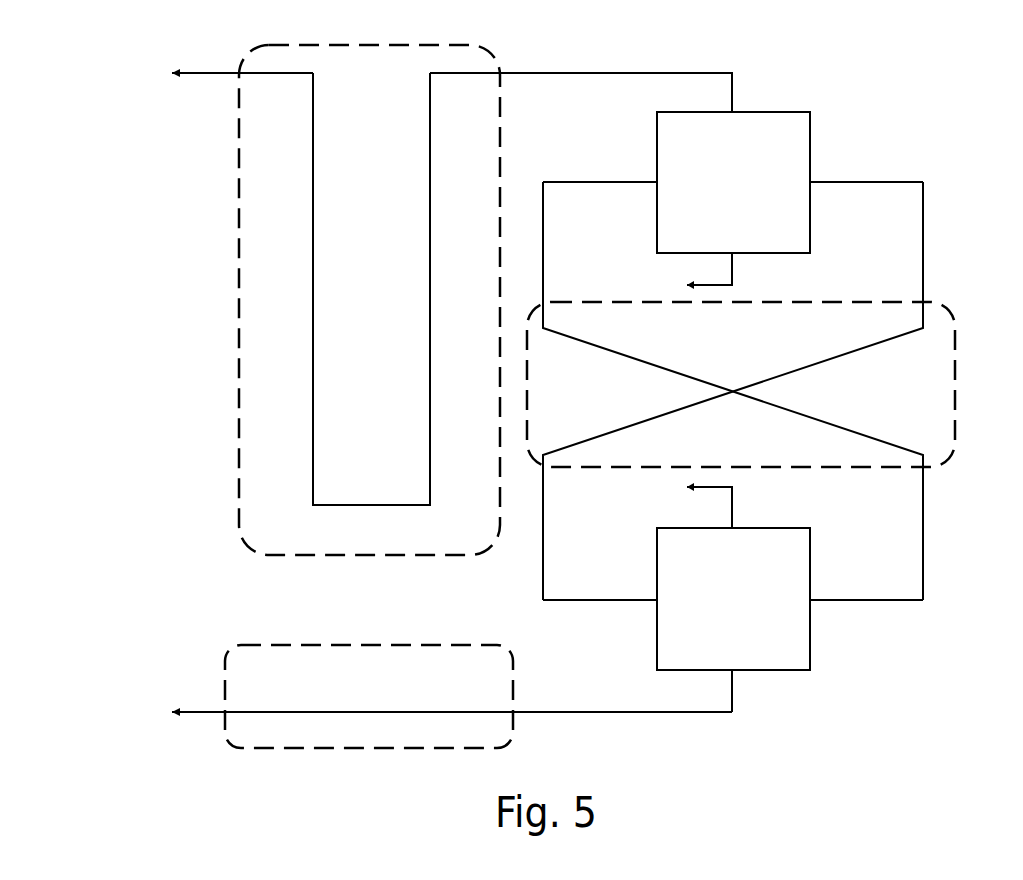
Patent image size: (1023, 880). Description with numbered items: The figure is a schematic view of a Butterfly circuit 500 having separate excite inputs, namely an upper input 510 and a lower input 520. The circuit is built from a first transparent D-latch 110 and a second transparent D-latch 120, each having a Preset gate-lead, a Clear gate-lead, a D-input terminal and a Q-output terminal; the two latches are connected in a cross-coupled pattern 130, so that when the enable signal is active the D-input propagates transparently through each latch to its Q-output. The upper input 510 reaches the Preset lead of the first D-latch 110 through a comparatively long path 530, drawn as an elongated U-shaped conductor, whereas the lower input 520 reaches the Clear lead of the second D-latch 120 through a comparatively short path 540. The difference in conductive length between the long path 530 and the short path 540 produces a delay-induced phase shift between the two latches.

The Butterfly circuit 500 is at (927, 70).
The upper input 510 is at (397, 67).
The lower input 520 is at (397, 712).
The comparatively long path 530 is at (378, 261).
The comparatively short path 540 is at (379, 699).
The first transparent D-latch 110 is at (749, 194).
The second transparent D-latch 120 is at (749, 612).
The cross-coupled pattern 130 is at (888, 404).